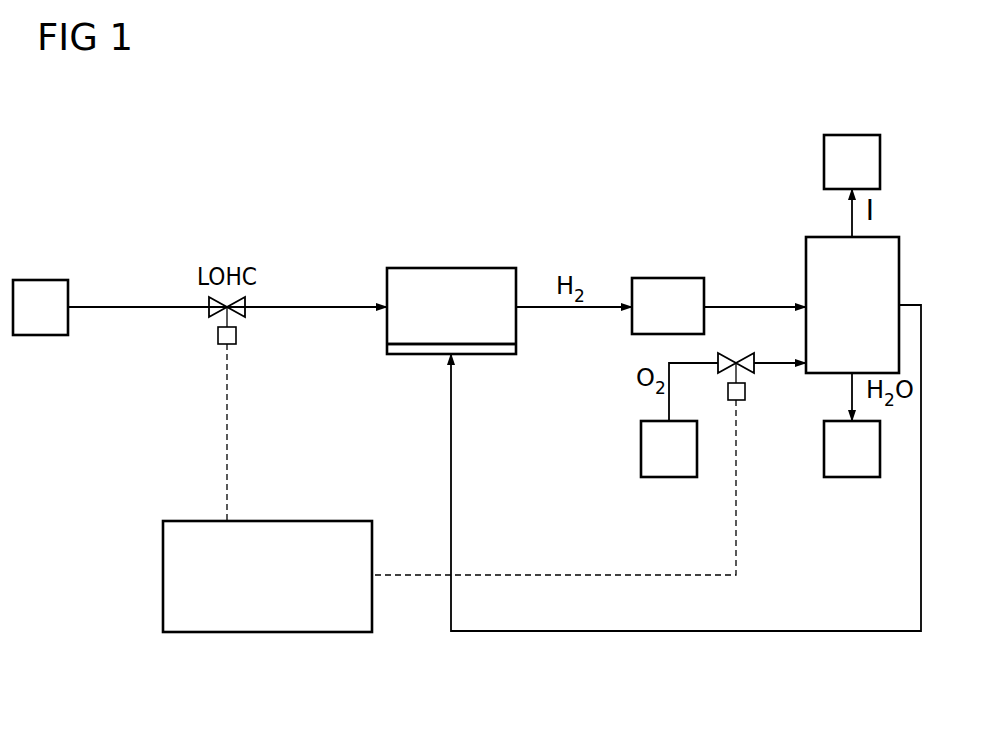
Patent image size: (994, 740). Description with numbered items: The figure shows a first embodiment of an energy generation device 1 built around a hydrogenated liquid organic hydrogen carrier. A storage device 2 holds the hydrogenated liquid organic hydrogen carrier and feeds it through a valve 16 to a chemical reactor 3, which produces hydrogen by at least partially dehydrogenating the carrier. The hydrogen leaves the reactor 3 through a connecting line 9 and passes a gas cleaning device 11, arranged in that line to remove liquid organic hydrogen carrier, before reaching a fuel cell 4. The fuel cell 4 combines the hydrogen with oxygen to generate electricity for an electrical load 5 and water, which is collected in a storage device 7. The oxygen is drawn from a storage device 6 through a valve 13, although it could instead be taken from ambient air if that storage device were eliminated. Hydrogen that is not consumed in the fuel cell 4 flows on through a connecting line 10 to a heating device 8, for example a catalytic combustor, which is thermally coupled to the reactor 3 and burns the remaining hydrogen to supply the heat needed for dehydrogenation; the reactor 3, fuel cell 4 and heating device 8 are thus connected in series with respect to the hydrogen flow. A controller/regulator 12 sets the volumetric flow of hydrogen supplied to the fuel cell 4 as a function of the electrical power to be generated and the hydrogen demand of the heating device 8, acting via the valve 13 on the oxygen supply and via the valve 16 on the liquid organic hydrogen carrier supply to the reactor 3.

The energy generation device 1 is at (245, 203).
The storage device 2 is at (40, 280).
The chemical reactor 3 is at (451, 268).
The fuel cell 4 is at (899, 276).
The electrical load 5 is at (852, 132).
The storage device 6 is at (668, 478).
The storage device 7 is at (852, 478).
The heating device 8 is at (488, 356).
The connecting line 9 is at (752, 306).
The connecting line 10 is at (852, 632).
The gas cleaning device 11 is at (668, 276).
The controller/regulator 12 is at (300, 520).
The valve 13 is at (753, 365).
The valve 16 is at (243, 307).